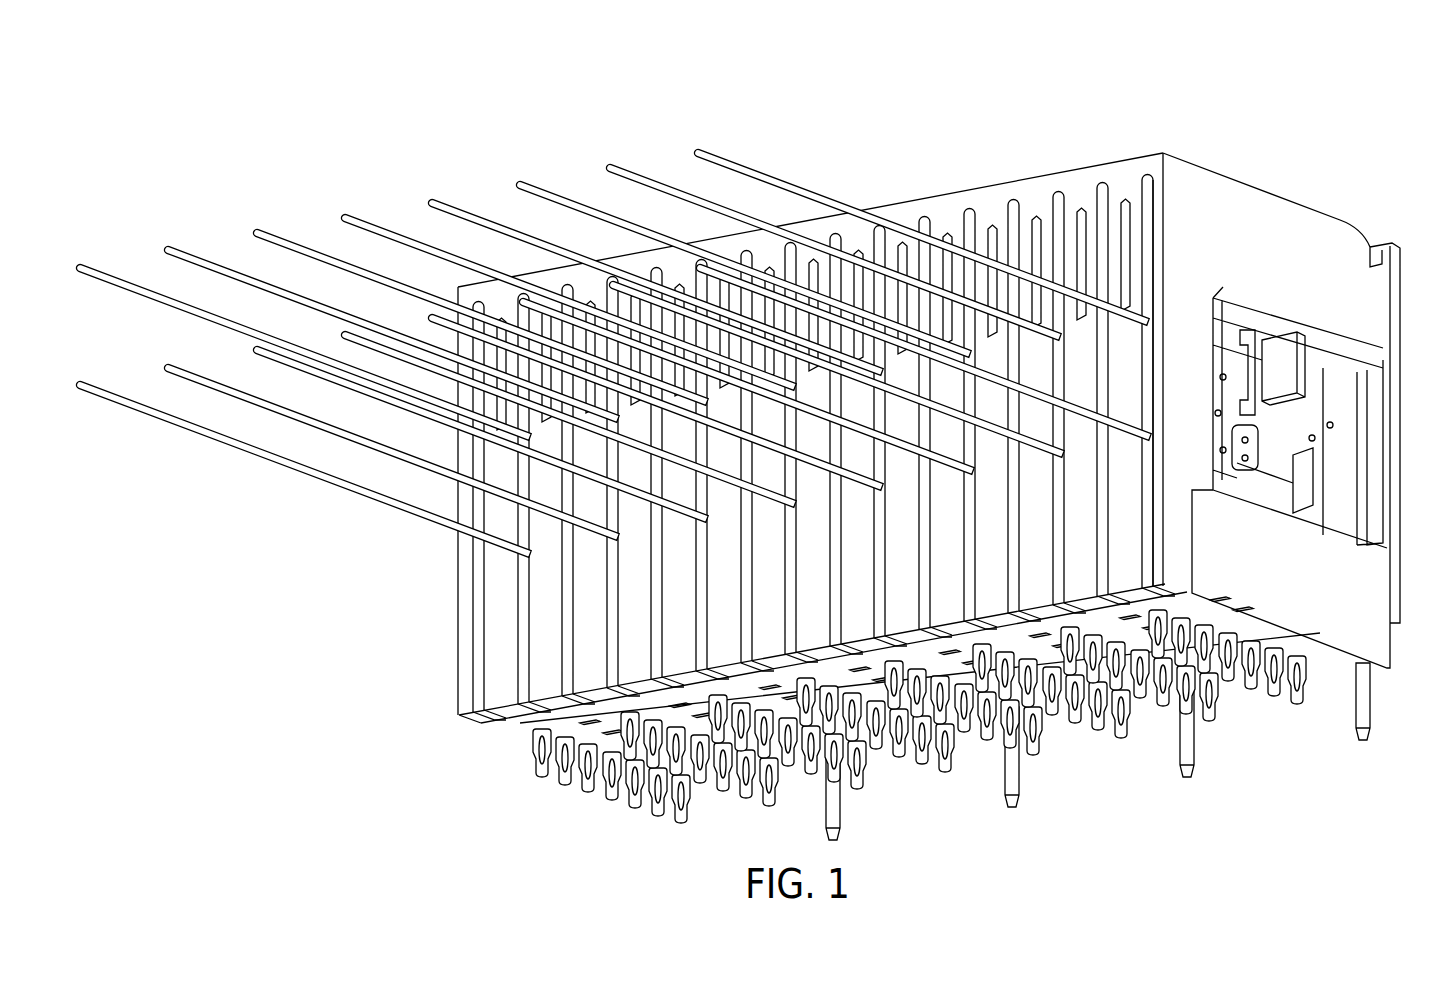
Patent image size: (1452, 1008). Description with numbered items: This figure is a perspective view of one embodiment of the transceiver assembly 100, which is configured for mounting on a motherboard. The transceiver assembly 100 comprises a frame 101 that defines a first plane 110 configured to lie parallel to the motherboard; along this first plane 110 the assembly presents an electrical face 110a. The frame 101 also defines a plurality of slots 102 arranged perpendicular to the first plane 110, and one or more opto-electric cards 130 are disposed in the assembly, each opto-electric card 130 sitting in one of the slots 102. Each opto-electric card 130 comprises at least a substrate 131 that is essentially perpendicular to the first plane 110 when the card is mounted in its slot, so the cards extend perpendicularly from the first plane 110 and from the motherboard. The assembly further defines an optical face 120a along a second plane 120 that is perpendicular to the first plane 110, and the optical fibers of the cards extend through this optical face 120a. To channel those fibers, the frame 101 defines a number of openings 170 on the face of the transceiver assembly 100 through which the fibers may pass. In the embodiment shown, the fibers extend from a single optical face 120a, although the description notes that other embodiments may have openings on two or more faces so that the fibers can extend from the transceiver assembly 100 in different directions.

The transceiver assembly 100 is at (1010, 105).
The frame 101 is at (1227, 197).
The slots 102 is at (1358, 408).
The first plane 110 is at (527, 735).
The electrical face 110a is at (542, 753).
The second plane 120 is at (465, 582).
The optical face 120a is at (489, 511).
The opto-electric card 130 is at (1318, 441).
The substrate 131 is at (1318, 475).
The openings 170 is at (1142, 550).